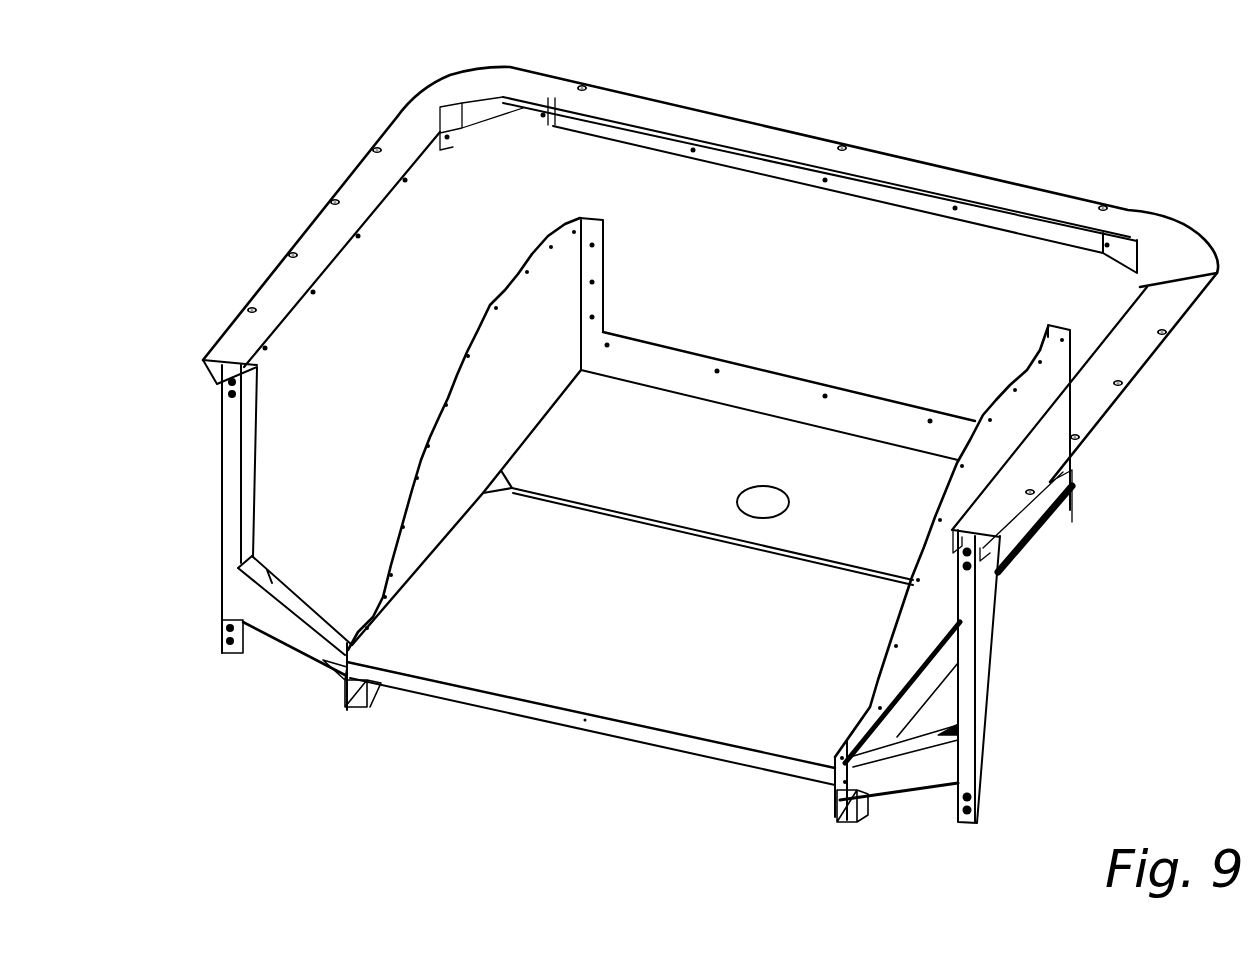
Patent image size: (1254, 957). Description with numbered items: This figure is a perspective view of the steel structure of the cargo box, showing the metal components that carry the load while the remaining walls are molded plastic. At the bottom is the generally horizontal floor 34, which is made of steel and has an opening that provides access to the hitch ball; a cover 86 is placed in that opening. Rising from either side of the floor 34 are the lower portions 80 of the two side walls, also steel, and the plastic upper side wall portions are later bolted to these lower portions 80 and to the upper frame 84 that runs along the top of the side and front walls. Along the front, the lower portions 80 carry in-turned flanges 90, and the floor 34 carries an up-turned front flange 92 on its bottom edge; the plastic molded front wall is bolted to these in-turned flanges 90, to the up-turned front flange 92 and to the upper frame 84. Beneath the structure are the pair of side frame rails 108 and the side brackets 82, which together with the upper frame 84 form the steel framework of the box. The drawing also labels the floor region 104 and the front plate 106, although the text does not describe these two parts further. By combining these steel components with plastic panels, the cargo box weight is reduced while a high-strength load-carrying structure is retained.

The floor 34 is at (712, 460).
The lower portions of the side walls 80 is at (500, 280).
The side brackets 82 is at (230, 532).
The upper frame 84 is at (985, 190).
The cover 86 is at (767, 497).
The in-turned flanges 90 is at (605, 268).
The up-turned front flange 92 is at (690, 360).
The floor panel 104 is at (895, 457).
The front plate 106 is at (668, 707).
The side frame rails 108 is at (357, 710).